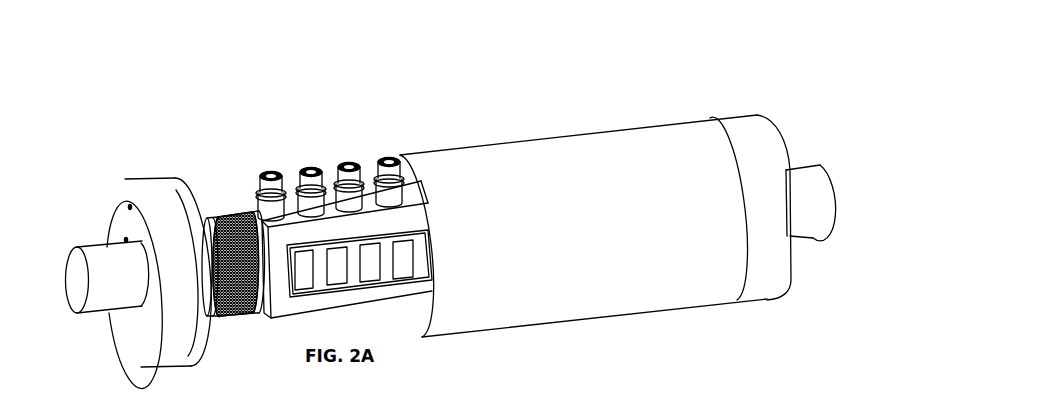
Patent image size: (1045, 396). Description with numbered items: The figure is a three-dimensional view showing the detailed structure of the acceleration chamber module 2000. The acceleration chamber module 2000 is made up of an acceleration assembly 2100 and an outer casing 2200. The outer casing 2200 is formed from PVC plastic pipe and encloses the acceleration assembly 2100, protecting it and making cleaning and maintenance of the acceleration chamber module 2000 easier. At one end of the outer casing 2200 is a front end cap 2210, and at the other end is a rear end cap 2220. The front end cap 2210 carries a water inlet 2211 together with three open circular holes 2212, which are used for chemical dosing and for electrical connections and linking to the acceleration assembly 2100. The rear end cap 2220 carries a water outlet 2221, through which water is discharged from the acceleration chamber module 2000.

The acceleration chamber module 2000 is at (808, 85).
The acceleration assembly 2100 is at (240, 207).
The outer casing 2200 is at (533, 140).
The front end cap 2210 is at (155, 178).
The water inlet 2211 is at (95, 316).
The open circular holes 2212 is at (128, 205).
The rear end cap 2220 is at (728, 115).
The water outlet 2221 is at (803, 165).